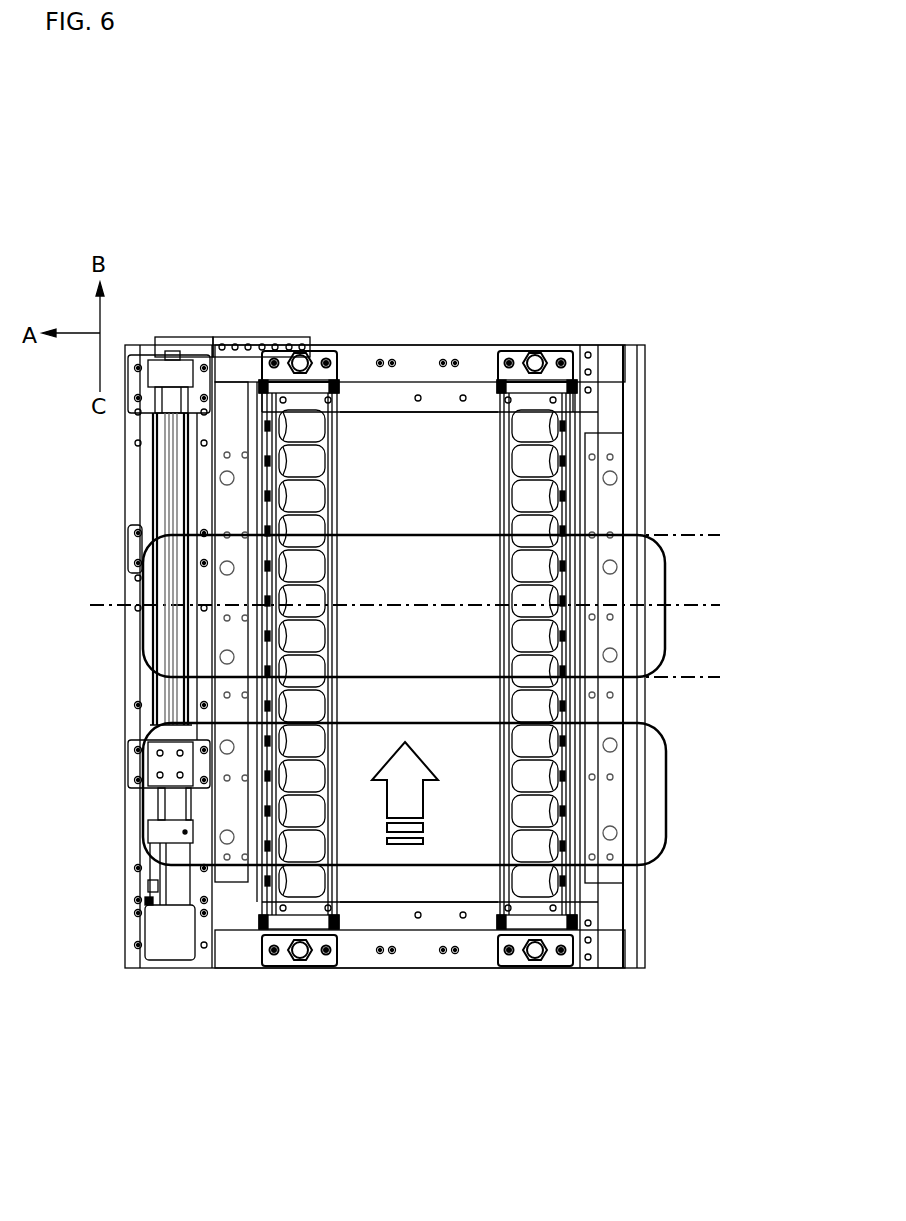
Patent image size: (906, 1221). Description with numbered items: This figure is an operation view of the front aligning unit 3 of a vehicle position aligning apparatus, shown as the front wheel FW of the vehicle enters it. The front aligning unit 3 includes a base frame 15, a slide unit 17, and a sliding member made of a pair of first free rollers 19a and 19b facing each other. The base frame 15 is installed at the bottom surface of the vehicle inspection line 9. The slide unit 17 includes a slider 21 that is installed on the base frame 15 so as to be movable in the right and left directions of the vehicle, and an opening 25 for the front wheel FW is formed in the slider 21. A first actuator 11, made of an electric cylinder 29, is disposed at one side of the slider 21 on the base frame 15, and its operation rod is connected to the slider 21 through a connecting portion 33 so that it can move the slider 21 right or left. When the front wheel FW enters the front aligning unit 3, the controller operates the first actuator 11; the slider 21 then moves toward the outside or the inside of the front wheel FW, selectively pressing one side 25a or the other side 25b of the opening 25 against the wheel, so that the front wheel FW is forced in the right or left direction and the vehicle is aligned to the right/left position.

The front aligning unit 3 is at (684, 316).
The vehicle inspection line 9 is at (713, 719).
The first actuator 11 is at (132, 486).
The base frame 15 is at (361, 355).
The slide unit 17 is at (360, 928).
The first free roller 19a is at (302, 457).
The first free roller 19b is at (538, 494).
The slider 21 is at (486, 918).
The opening 25 is at (463, 432).
The one side of the opening 25a is at (425, 415).
The other side of the opening 25b is at (430, 900).
The electric cylinder 29 is at (166, 517).
The connecting portion 33 is at (187, 338).
The front wheel FW is at (667, 642).